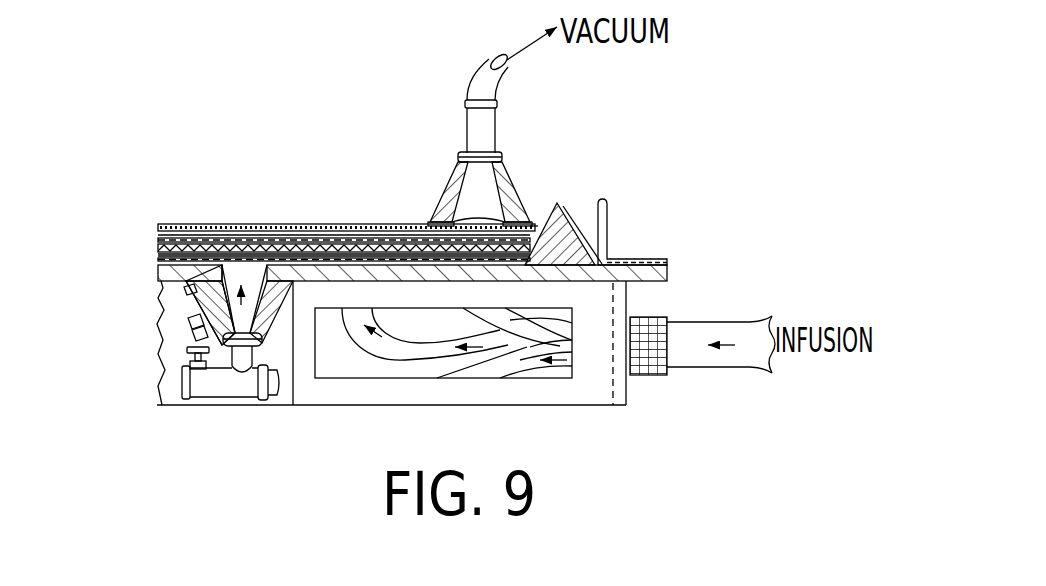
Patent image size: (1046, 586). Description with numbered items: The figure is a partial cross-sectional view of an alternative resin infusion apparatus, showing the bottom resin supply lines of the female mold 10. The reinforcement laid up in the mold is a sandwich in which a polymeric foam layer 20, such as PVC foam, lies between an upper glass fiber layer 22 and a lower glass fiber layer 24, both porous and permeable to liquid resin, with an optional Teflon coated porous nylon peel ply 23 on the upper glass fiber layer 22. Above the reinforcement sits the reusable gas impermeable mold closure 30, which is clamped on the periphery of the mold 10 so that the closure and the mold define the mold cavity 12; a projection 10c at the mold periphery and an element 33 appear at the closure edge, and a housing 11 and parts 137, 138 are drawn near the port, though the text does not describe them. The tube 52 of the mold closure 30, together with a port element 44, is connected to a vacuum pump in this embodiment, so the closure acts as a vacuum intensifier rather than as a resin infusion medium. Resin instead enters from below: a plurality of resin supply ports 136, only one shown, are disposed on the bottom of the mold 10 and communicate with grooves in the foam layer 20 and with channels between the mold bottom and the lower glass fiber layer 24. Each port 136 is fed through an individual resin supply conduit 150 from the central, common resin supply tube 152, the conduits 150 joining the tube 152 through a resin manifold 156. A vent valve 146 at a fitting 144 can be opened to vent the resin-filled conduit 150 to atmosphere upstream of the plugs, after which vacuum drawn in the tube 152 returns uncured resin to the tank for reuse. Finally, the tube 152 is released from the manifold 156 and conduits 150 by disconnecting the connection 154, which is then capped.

The female mold 10 is at (756, 252).
The wedge support 10c is at (652, 128).
The housing 11 is at (570, 390).
The mold cavity 12 is at (542, 222).
The polymeric foam layer 20 is at (157, 250).
The upper glass fiber layer 22 is at (157, 240).
The peel ply 23 is at (157, 232).
The lower glass fiber layer 24 is at (157, 260).
The mold closure 30 is at (237, 140).
The bracket 33 is at (699, 168).
The vacuum port 44 is at (597, 85).
The tube 52 is at (605, 50).
The resin supply port 136 is at (282, 325).
The clamp 137 is at (192, 291).
The bracket 138 is at (202, 316).
The fitting 144 is at (247, 407).
The vent valve 146 is at (198, 373).
The resin supply conduit 150 is at (512, 345).
The central common resin supply tube 152 is at (707, 372).
The connection 154 is at (645, 375).
The resin manifold 156 is at (616, 302).